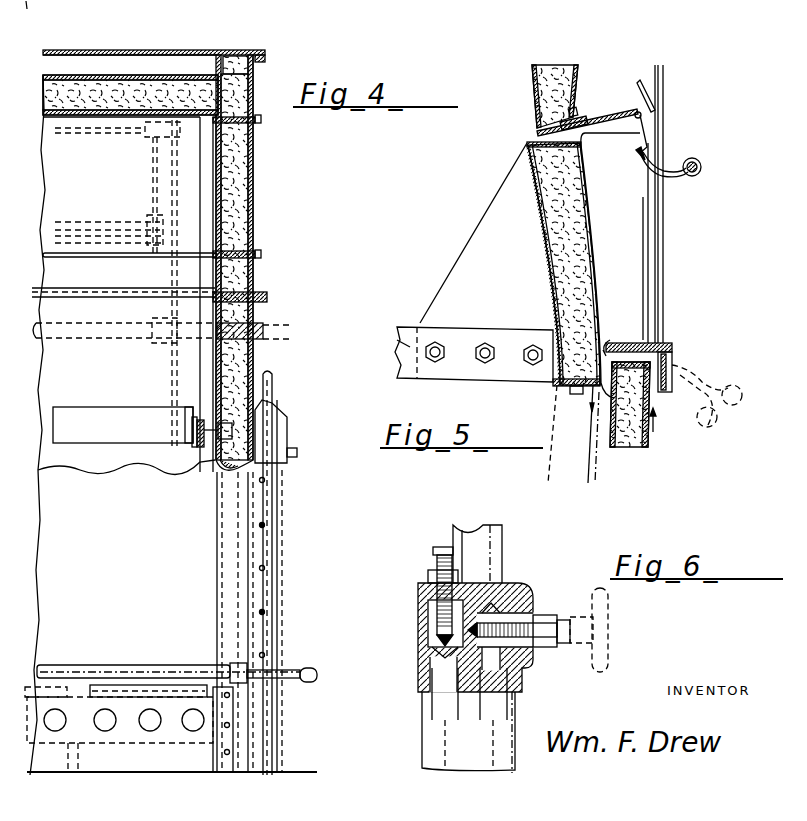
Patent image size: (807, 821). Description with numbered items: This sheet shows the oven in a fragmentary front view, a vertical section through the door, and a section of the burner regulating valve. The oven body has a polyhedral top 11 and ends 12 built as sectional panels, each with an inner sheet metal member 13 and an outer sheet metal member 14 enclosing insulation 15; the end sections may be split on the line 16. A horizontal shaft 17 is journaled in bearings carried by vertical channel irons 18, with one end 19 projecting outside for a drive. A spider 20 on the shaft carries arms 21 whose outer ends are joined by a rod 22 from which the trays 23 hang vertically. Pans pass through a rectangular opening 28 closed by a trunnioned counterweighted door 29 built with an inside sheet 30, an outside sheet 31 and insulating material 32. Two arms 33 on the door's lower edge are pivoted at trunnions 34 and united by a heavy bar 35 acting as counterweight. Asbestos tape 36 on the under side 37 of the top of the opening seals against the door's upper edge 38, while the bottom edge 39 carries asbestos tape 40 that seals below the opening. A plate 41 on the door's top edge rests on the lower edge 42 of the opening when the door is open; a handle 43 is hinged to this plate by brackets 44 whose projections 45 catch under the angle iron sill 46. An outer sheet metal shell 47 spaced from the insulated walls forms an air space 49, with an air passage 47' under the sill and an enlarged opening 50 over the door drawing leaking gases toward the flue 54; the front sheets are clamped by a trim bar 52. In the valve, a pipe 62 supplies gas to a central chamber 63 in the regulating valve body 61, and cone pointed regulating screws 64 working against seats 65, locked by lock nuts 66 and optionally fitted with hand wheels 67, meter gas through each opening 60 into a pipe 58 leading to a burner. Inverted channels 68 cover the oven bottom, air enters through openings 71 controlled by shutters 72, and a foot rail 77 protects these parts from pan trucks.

In FIG. 4, the polyhedral top 11 is at (162, 49).
In FIG. 4, the ends 12 is at (257, 198).
In FIG. 4, the inner sheet metal member 13 is at (237, 176).
In FIG. 5, the inner sheet metal member 13 is at (513, 0).
In FIG. 4, the outer sheet metal member 14 is at (255, 152).
In FIG. 5, the outer sheet metal member 14 is at (470, 0).
In FIG. 4, the insulation 15 is at (237, 175).
In FIG. 5, the insulation 15 is at (562, 0).
In FIG. 4, the line 16 is at (272, 297).
In FIG. 4, the horizontal shaft 17 is at (98, 335).
In FIG. 4, the vertical channel irons 18 is at (373, 0).
In FIG. 4, the end of the shaft 19 is at (293, 327).
In FIG. 4, the spider 20 is at (167, 367).
In FIG. 4, the arms 21 is at (172, 267).
In FIG. 4, the rod 22 is at (77, 132).
In FIG. 4, the trays 23 is at (105, 227).
In FIG. 5, the rectangular opening 28 is at (665, 253).
In FIG. 5, the trunnioned counterweighted door 29 is at (548, 245).
In FIG. 5, the inside sheet 30 is at (557, 280).
In FIG. 5, the outside sheet 31 is at (600, 283).
In FIG. 5, the insulating material 32 is at (557, 305).
In FIG. 4, the arms 33 is at (198, 445).
In FIG. 5, the arms 33 is at (410, 347).
In FIG. 4, the trunnions 34 is at (192, 443).
In FIG. 4, the heavy bar 35 is at (123, 425).
In FIG. 5, the asbestos tape 36 is at (593, 118).
In FIG. 5, the under side of the top of opening 37 is at (537, 132).
In FIG. 5, the upper edge of the door 38 is at (527, 143).
In FIG. 5, the bottom edge of the door 39 is at (544, 448).
In FIG. 5, the asbestos tape 40 is at (591, 448).
In FIG. 5, the plate 41 is at (597, 117).
In FIG. 5, the lower edge of the opening 42 is at (647, 373).
In FIG. 5, the handle 43 is at (701, 165).
In FIG. 5, the bracket 44 is at (667, 163).
In FIG. 5, the projection 45 is at (663, 167).
In FIG. 5, the angle iron sill 46 is at (672, 348).
In FIG. 4, the outer sheet metal shell 47 is at (130, 35).
In FIG. 5, the air passage 47' is at (633, 333).
In FIG. 4, the air space 49 is at (177, 66).
In FIG. 5, the enlarged opening 50 is at (620, 80).
In FIG. 5, the trim bar 52 is at (660, 147).
In FIG. 4, the flue 54 is at (36, 14).
In FIG. 6, the pipe 58 is at (493, 707).
In FIG. 6, the opening 60 is at (430, 660).
In FIG. 4, the regulating valve body 61 is at (275, 443).
In FIG. 6, the regulating valve body 61 is at (427, 632).
In FIG. 4, the pipe 62 is at (272, 387).
In FIG. 6, the pipe 62 is at (455, 520).
In FIG. 6, the central chamber 63 is at (458, 620).
In FIG. 4, the cone pointed regulating screws 64 is at (300, 455).
In FIG. 6, the cone pointed regulating screws 64 is at (437, 552).
In FIG. 6, the seats 65 is at (427, 648).
In FIG. 6, the lock nuts 66 is at (430, 570).
In FIG. 6, the hand wheels 67 is at (607, 638).
In FIG. 4, the inverted channels 68 is at (73, 743).
In FIG. 4, the openings 71 is at (55, 717).
In FIG. 4, the shutters 72 is at (128, 693).
In FIG. 4, the foot rail 77 is at (185, 673).